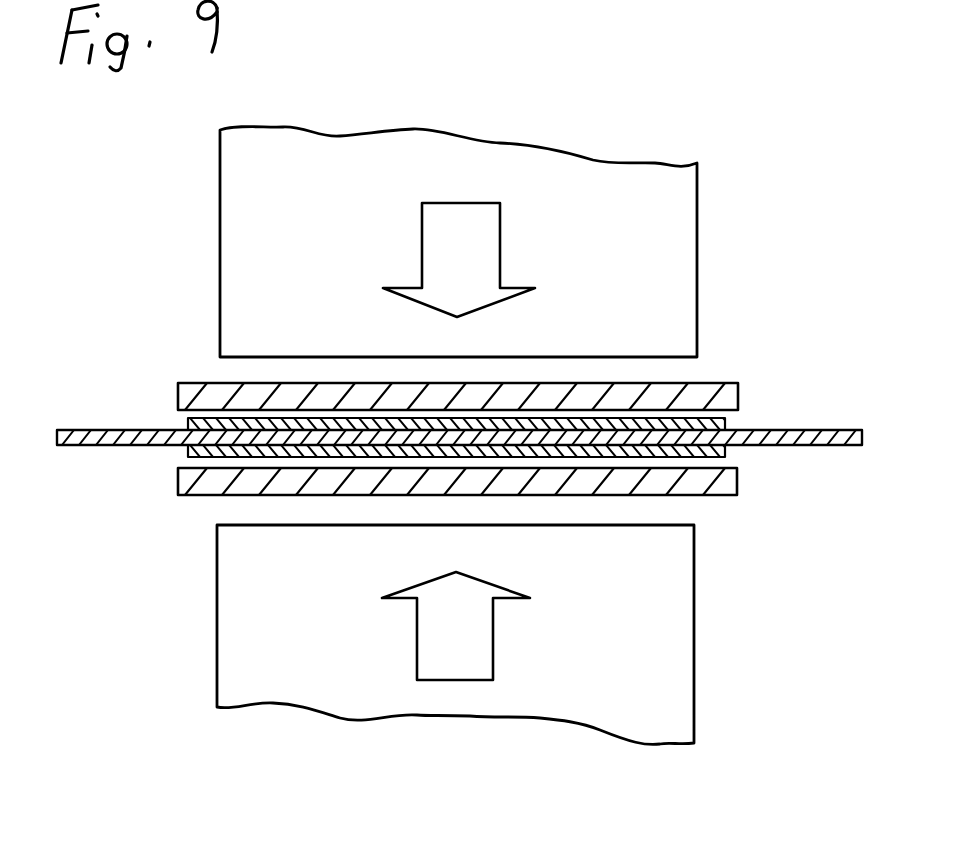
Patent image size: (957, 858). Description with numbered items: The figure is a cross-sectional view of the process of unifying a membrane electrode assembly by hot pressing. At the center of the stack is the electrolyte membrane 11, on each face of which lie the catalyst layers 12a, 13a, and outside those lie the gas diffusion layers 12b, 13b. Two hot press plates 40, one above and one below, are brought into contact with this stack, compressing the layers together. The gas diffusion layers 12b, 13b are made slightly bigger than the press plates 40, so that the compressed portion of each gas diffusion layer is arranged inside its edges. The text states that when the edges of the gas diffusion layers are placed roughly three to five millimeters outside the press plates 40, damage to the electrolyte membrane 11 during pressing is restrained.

The press plate 40 is at (672, 280).
The gas diffusion layer 12b is at (723, 400).
The catalyst layer 12a is at (713, 428).
The electrolyte membrane 11 is at (847, 447).
The catalyst layer 13a is at (713, 453).
The gas diffusion layer 13b is at (720, 485).